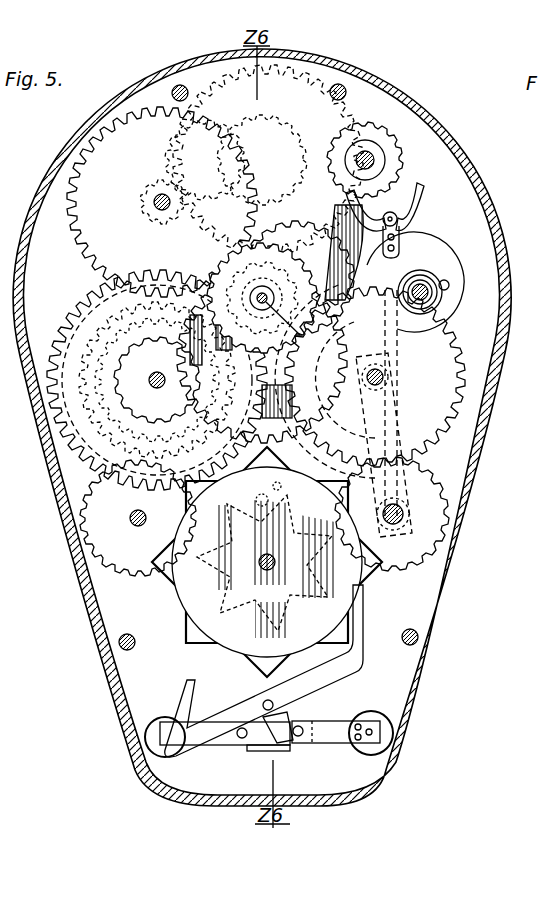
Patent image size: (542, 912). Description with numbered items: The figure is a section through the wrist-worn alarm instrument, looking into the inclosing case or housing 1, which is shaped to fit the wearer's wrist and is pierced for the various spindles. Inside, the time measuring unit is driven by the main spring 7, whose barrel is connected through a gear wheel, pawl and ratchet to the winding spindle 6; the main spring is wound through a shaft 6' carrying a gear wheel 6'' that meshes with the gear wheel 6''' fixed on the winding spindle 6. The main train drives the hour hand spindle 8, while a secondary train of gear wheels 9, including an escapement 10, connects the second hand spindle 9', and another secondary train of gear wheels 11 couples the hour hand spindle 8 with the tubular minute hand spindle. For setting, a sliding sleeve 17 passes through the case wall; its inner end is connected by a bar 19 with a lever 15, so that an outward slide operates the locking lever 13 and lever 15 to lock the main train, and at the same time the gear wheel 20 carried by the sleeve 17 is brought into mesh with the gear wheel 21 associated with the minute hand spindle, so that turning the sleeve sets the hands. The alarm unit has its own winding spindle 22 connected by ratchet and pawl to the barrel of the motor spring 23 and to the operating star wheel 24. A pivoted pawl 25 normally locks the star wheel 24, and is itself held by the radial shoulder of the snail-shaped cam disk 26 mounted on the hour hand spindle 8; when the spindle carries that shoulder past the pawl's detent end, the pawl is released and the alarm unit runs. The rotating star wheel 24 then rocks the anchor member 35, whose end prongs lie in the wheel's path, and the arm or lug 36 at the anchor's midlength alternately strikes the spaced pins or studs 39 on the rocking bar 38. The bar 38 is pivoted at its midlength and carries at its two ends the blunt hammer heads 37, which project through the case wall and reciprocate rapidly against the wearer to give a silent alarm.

The inclosing case or housing 1 is at (500, 230).
The winding spindle 6 is at (157, 380).
The shaft 6' is at (138, 518).
The gear wheel 6'' is at (142, 413).
The gear wheel 6''' is at (121, 382).
The main spring 7 is at (86, 410).
The hour hand spindle 8 is at (262, 289).
The secondary train of gear wheels 9 is at (268, 144).
The second hand spindle 9' is at (262, 160).
The escapement 10 is at (401, 164).
The secondary train of gear wheels 11 is at (100, 236).
The locking lever 13 is at (196, 228).
The lever 15 is at (348, 250).
The sliding sleeve 17 is at (404, 516).
The bar 19 is at (384, 411).
The gear wheel 20 is at (419, 480).
The gear wheel 21 is at (448, 392).
The winding spindle 22 is at (259, 562).
The motor spring 23 is at (348, 232).
The star wheel 24 is at (192, 637).
The pivoted pawl 25 is at (284, 470).
The cam disk or snail 26 is at (400, 237).
The rocking anchor member 35 is at (228, 710).
The arm or lug 36 is at (287, 709).
The blunt hammer heads 37 is at (160, 718).
The rocking bar 38 is at (338, 743).
The spaced pins or studs 39 is at (242, 740).